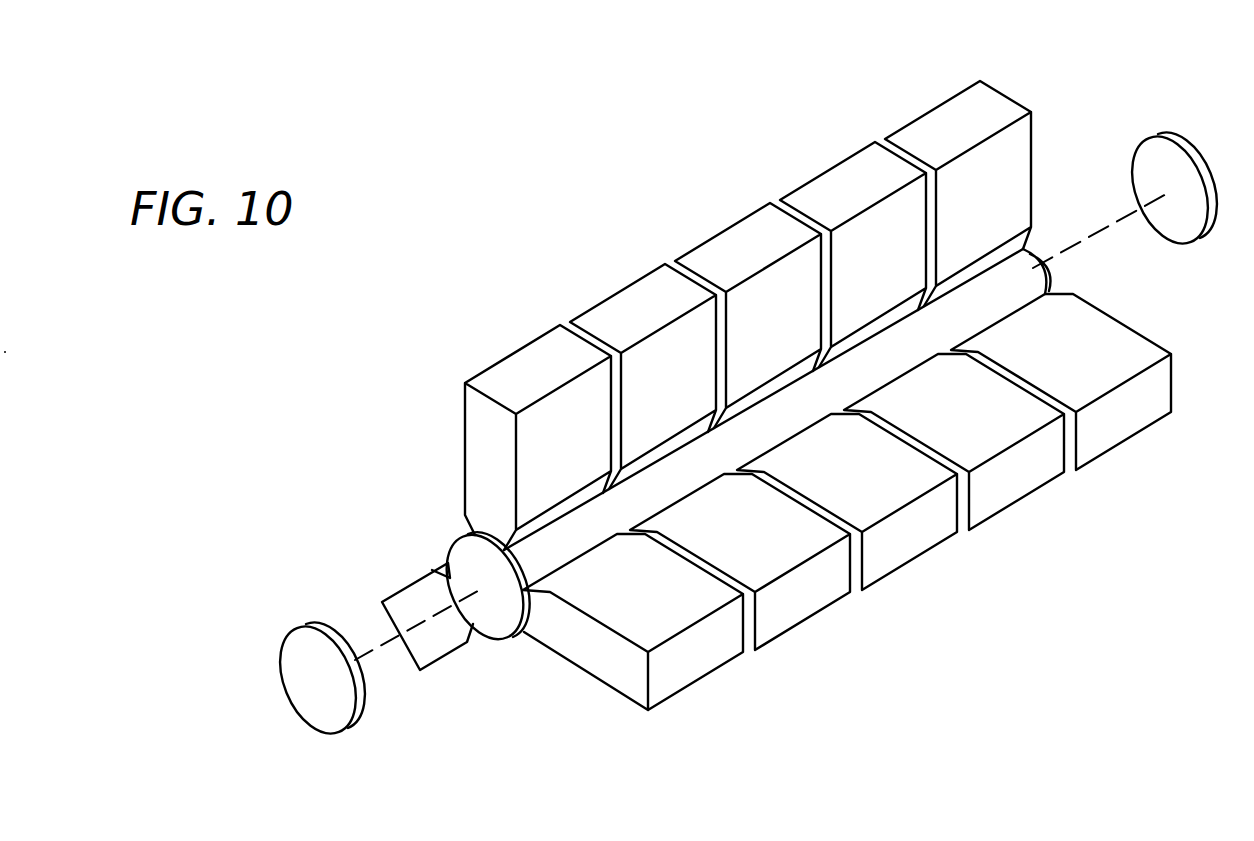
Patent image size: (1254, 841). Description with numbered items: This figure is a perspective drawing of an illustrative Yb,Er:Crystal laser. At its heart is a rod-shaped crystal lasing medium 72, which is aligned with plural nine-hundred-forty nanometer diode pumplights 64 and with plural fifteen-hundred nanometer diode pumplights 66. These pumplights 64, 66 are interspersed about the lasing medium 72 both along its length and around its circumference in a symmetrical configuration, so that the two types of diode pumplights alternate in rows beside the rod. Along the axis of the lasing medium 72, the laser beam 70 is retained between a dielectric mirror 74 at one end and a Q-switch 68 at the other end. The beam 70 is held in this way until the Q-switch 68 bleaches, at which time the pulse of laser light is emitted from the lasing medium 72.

The 940 nanometer diode pumplight 64 is at (620, 290).
The 1500 nanometer diode pumplight 66 is at (510, 355).
The Q-switch 68 is at (283, 687).
The laser beam 70 is at (365, 655).
The rod-shaped crystal lasing medium 72 is at (502, 637).
The dielectric mirror 74 is at (1210, 167).